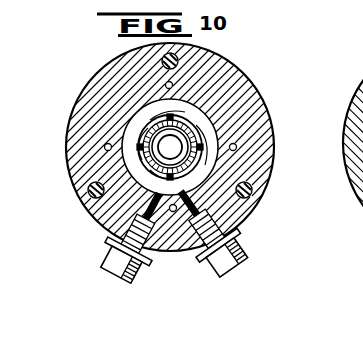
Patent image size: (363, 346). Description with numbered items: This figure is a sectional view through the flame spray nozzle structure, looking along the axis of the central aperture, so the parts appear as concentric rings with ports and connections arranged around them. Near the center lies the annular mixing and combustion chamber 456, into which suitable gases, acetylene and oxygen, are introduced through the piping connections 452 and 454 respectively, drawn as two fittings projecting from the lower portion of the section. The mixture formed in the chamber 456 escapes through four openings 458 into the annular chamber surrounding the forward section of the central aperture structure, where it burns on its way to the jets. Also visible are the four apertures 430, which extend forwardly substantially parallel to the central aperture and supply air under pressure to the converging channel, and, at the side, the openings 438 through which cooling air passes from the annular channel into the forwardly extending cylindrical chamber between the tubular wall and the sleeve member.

The apertures 430 is at (104, 147).
The openings 438 is at (351, 100).
The piping connection 452 is at (90, 258).
The piping connection 454 is at (241, 262).
The annular mixing and combustion chamber 456 is at (214, 116).
The openings 458 is at (136, 147).